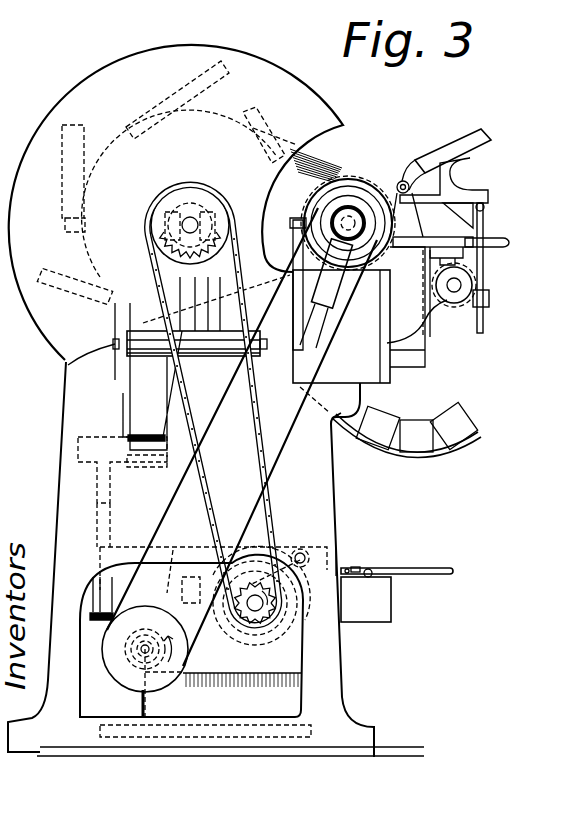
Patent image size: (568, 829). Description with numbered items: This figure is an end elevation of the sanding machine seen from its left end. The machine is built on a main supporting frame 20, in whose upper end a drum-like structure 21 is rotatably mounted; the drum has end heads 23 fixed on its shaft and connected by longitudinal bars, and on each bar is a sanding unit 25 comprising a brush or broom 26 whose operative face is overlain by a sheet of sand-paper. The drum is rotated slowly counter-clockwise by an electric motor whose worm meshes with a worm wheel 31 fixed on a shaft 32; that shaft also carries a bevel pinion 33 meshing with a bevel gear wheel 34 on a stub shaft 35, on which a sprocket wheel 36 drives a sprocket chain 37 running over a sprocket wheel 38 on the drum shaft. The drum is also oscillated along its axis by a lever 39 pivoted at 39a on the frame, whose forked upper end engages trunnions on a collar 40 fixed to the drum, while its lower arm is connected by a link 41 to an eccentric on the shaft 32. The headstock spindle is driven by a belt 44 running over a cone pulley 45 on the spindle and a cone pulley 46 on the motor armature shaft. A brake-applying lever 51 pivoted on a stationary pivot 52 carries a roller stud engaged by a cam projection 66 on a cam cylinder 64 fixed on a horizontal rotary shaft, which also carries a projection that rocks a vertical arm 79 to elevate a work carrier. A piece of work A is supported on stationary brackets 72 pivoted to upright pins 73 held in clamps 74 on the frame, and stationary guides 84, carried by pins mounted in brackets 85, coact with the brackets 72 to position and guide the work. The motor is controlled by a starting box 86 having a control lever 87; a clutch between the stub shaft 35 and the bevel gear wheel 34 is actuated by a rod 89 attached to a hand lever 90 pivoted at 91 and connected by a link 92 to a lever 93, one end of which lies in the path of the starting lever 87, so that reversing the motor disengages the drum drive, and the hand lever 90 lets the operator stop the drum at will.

The main supporting frame 20 is at (342, 648).
The drum-like structure 21 is at (68, 256).
The end heads 23 is at (125, 130).
The sanding unit 25 is at (62, 225).
The brush or broom 26 is at (218, 89).
The worm wheel 31 is at (103, 643).
The shaft 32 is at (170, 597).
The bevel pinion 33 is at (232, 628).
The bevel gear wheel 34 is at (302, 655).
The stub shaft 35 is at (255, 607).
The sprocket wheel 36 is at (248, 575).
The sprocket chain 37 is at (188, 403).
The sprocket wheel 38 is at (165, 258).
The lever 39 is at (170, 198).
The pivot 39a is at (67, 365).
The collar 40 is at (190, 205).
The link 41 is at (97, 530).
The belt 44 is at (288, 433).
The cone pulley 45 is at (352, 202).
The cone pulley 46 is at (112, 676).
The lever 51 is at (512, 243).
The stationary pivot 52 is at (302, 216).
The cam cylinder 64 is at (452, 304).
The cam projection 66 is at (440, 270).
The stationary brackets 72 is at (456, 177).
The upright pins 73 is at (485, 271).
The clamps 74 is at (490, 299).
The vertical arm 79 is at (441, 258).
The stationary guides 84 is at (445, 147).
The brackets 85 is at (403, 180).
The rheostat or starting box 86 is at (392, 609).
The control lever 87 is at (371, 577).
The rod 89 is at (306, 555).
The hand lever 90 is at (437, 566).
The pivot 91 is at (341, 551).
The link 92 is at (358, 565).
The lever 93 is at (350, 575).
The piece of work A is at (422, 425).